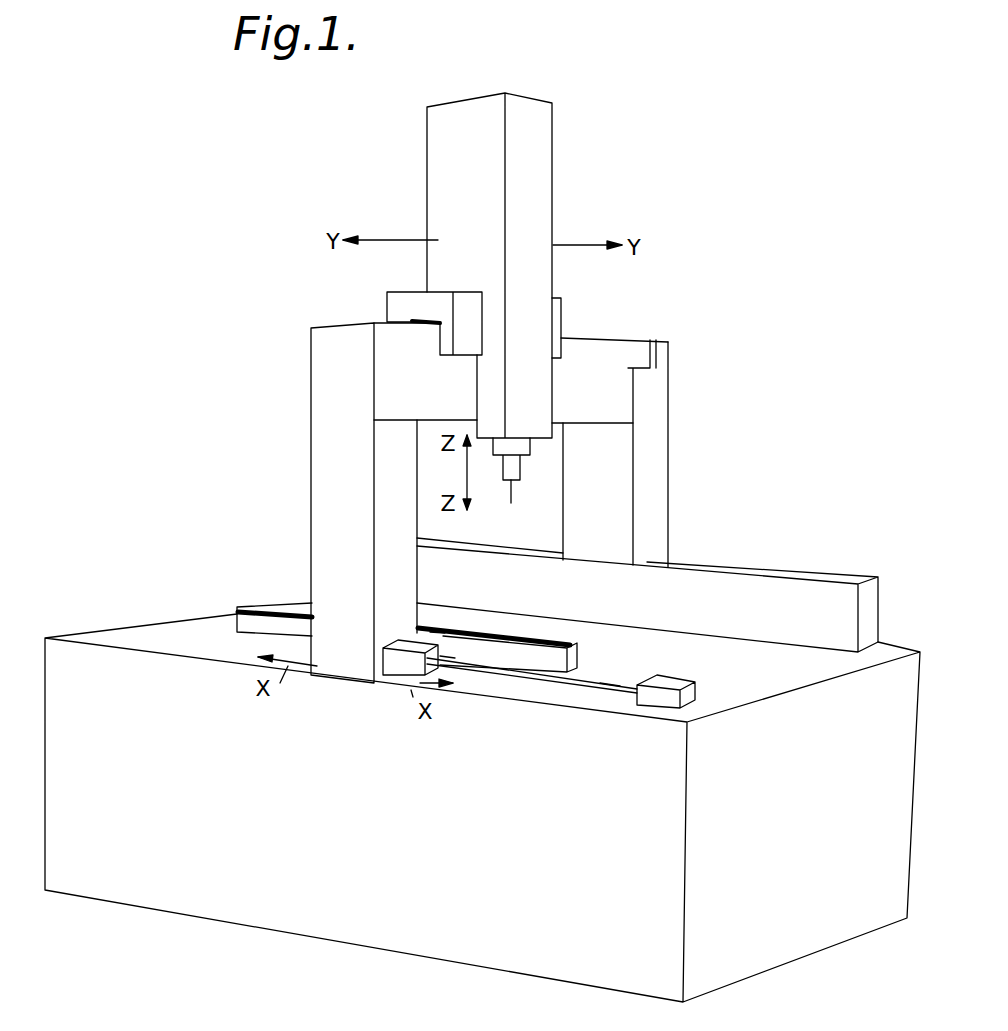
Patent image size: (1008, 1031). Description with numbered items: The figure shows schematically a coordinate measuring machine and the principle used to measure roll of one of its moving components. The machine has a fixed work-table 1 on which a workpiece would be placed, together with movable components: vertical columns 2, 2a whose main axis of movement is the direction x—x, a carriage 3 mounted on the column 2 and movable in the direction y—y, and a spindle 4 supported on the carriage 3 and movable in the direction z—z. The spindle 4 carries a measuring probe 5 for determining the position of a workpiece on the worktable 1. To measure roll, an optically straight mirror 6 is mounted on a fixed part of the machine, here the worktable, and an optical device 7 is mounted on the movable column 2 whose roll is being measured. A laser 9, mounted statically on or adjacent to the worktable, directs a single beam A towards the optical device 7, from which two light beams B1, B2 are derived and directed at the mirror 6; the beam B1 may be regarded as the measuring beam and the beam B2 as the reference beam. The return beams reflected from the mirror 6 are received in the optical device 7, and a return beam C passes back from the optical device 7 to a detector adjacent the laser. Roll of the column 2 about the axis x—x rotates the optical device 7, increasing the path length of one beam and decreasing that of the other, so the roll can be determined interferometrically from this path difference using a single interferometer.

The work-table 1 is at (232, 912).
The vertical column 2 is at (312, 475).
The vertical column 2a is at (658, 453).
The carriage 3 is at (543, 328).
The spindle 4 is at (528, 450).
The measuring probe 5 is at (508, 465).
The optically straight mirror 6 is at (570, 645).
The optical device 7 is at (381, 660).
The laser 9 is at (660, 698).
The single beam A is at (583, 690).
The return beam C is at (610, 683).
The measuring beam B1 is at (447, 655).
The reference beam B2 is at (440, 632).